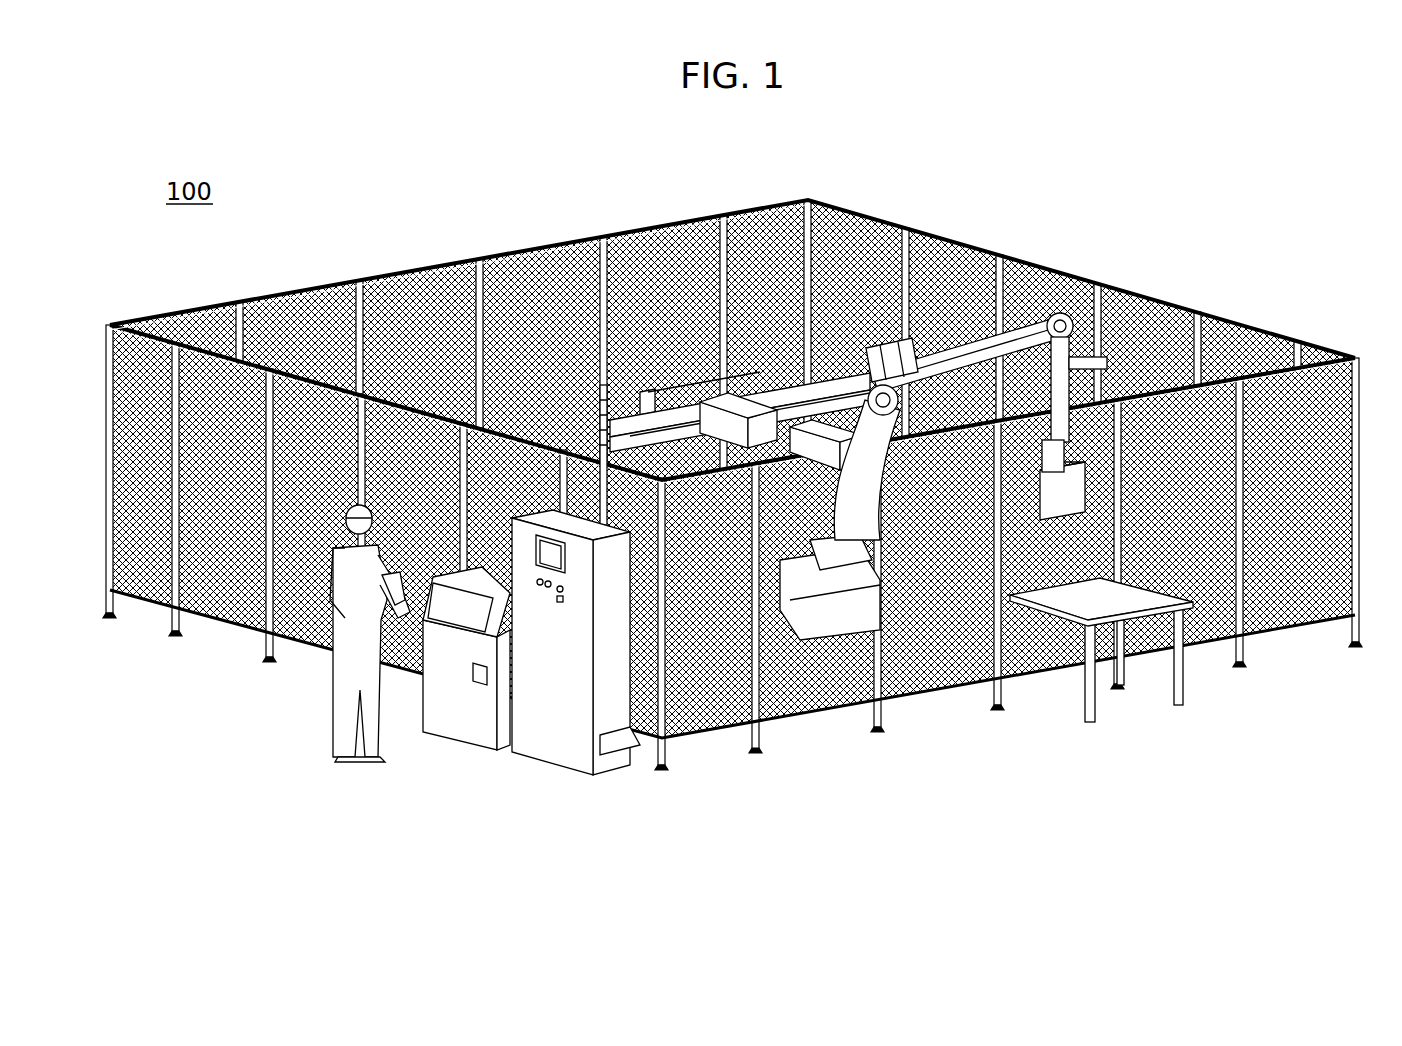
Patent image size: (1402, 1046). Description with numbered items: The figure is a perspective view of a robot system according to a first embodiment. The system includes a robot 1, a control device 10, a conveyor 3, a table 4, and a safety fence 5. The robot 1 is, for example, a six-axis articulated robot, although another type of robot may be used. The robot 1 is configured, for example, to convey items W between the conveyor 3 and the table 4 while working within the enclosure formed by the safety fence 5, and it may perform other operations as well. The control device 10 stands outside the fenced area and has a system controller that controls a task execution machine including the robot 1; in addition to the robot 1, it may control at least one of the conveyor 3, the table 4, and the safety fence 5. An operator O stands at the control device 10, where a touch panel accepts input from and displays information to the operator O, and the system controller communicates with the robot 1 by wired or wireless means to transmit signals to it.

The robot 1 is at (1033, 298).
The conveyor 3 is at (673, 393).
The table 4 is at (1125, 597).
The safety fence 5 is at (395, 277).
The control device 10 is at (484, 772).
The items W is at (750, 405).
The operator O is at (347, 593).